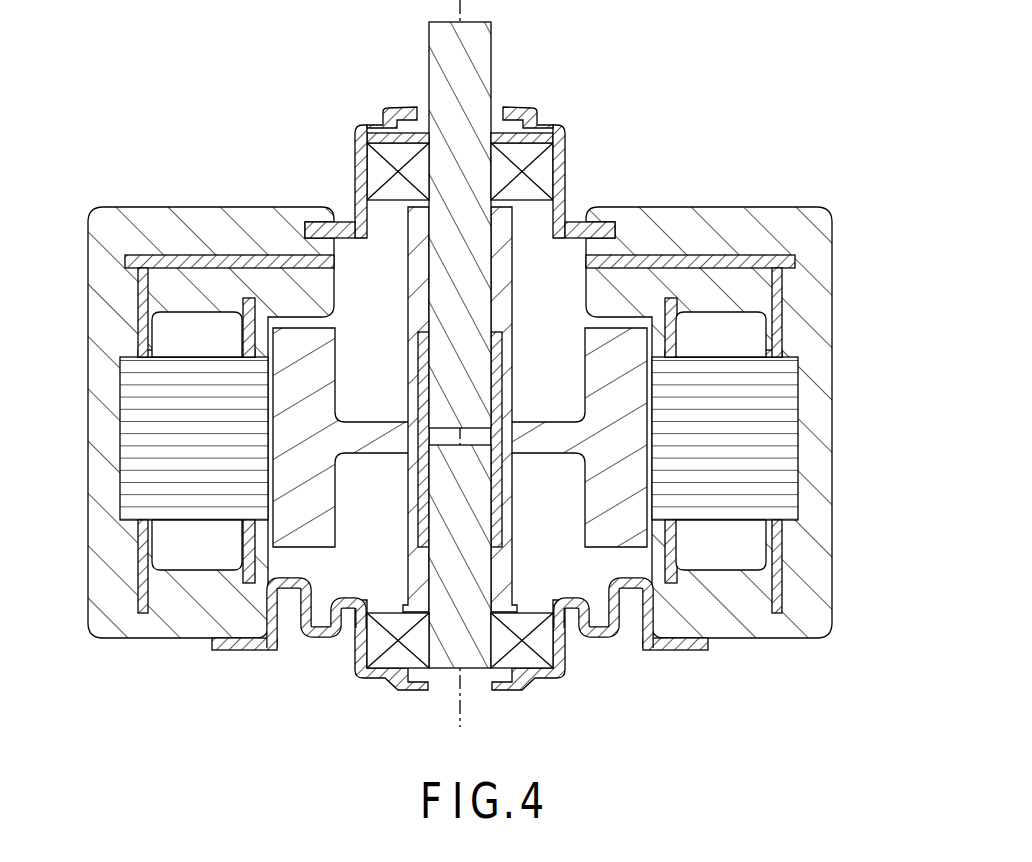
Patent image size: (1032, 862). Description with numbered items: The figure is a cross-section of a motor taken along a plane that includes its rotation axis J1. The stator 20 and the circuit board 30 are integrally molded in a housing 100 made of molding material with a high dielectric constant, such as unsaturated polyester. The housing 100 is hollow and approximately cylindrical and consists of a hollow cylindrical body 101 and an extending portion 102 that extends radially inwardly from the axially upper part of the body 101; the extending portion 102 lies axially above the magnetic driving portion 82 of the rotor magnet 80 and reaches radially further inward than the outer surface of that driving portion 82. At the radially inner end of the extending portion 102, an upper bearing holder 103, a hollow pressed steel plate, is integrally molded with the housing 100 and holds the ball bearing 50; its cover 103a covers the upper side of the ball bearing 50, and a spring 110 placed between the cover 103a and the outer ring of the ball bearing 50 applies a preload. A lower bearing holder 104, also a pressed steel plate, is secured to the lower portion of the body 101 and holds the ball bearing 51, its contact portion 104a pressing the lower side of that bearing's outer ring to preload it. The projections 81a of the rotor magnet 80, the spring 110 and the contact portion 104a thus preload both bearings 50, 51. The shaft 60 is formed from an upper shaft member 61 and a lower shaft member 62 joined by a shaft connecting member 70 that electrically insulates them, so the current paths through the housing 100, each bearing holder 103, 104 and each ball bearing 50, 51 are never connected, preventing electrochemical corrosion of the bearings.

The rotation axis J1 is at (465, 5).
The stator 20 is at (767, 455).
The circuit board 30 is at (700, 217).
The ball bearing 50 is at (377, 177).
The ball bearing 51 is at (405, 657).
The shaft 60 is at (468, 377).
The upper shaft member 61 is at (445, 92).
The lower shaft member 62 is at (475, 658).
The shaft connecting member 70 is at (503, 430).
The rotor magnet 80 is at (501, 459).
The projections 81a is at (514, 208).
The magnetic driving portion 82 is at (330, 500).
The housing 100 is at (177, 359).
The body 101 is at (105, 432).
The extending portion 102 is at (285, 250).
The upper bearing holder 103 is at (575, 165).
The cover 103a is at (395, 118).
The lower bearing holder 104 is at (315, 652).
The contact portion 104a is at (385, 675).
The spring 110 is at (553, 137).